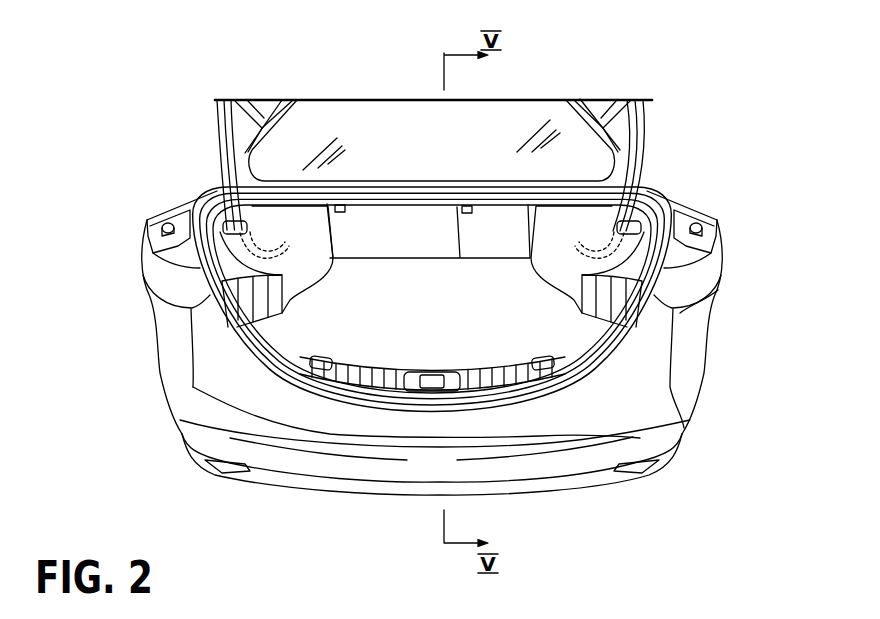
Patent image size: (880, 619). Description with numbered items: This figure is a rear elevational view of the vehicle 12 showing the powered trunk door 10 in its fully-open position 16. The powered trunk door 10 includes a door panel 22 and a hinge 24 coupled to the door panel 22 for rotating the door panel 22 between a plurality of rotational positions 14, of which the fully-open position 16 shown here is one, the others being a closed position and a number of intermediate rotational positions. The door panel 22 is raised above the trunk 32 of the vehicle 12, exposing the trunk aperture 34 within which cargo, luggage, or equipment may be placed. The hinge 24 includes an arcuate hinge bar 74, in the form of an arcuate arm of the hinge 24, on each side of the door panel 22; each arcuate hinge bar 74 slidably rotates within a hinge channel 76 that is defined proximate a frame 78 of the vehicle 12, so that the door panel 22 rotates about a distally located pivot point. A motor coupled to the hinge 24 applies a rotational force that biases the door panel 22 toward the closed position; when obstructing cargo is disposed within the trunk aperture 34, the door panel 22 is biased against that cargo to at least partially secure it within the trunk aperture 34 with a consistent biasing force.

The powered trunk door 10 is at (668, 135).
The vehicle 12 is at (120, 237).
The plurality of rotational positions 14 is at (212, 135).
The fully-open position 16 is at (648, 163).
The door panel 22 is at (605, 103).
The hinge 24 is at (196, 170).
The trunk 32 is at (363, 315).
The trunk aperture 34 is at (590, 387).
The arcuate hinge bar 74 is at (250, 99).
The hinge channel 76 is at (592, 263).
The frame 78 is at (596, 316).